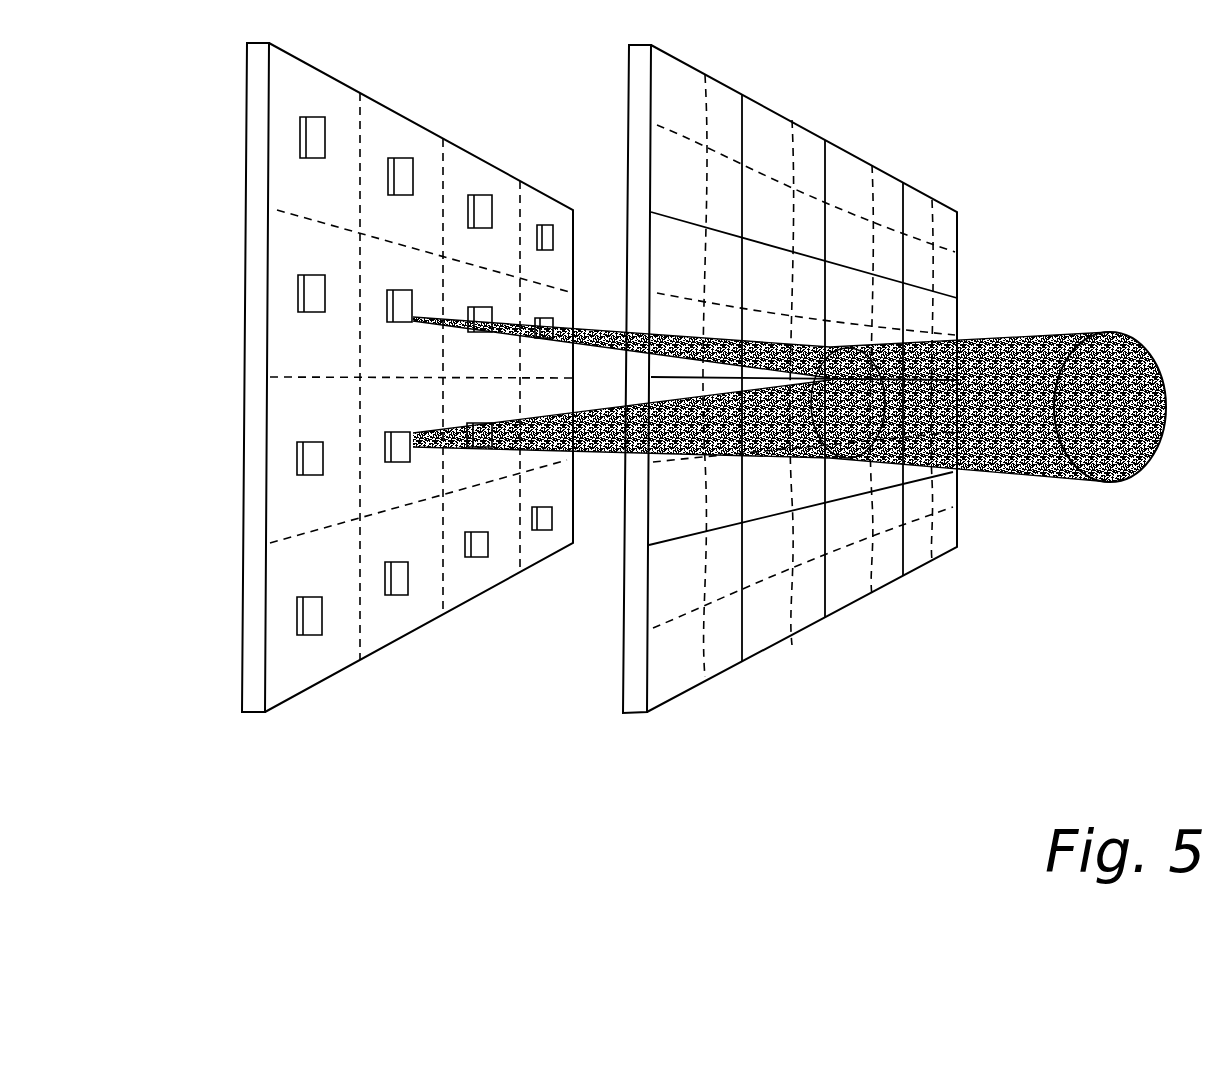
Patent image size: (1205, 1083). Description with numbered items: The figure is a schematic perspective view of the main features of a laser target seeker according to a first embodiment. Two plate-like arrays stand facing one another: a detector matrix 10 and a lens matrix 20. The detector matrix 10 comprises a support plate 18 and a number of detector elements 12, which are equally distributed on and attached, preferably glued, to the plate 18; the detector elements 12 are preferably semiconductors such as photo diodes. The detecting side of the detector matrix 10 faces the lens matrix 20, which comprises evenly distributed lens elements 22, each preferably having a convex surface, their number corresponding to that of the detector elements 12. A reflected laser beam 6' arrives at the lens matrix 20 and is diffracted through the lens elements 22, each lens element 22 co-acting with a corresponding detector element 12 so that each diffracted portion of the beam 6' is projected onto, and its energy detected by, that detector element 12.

The detector matrix 10 is at (212, 752).
The detector element 12 is at (308, 620).
The support plate 18 is at (423, 602).
The lens matrix 20 is at (602, 765).
The lens element 22 is at (697, 635).
The reflected laser beam 6' is at (789, 479).